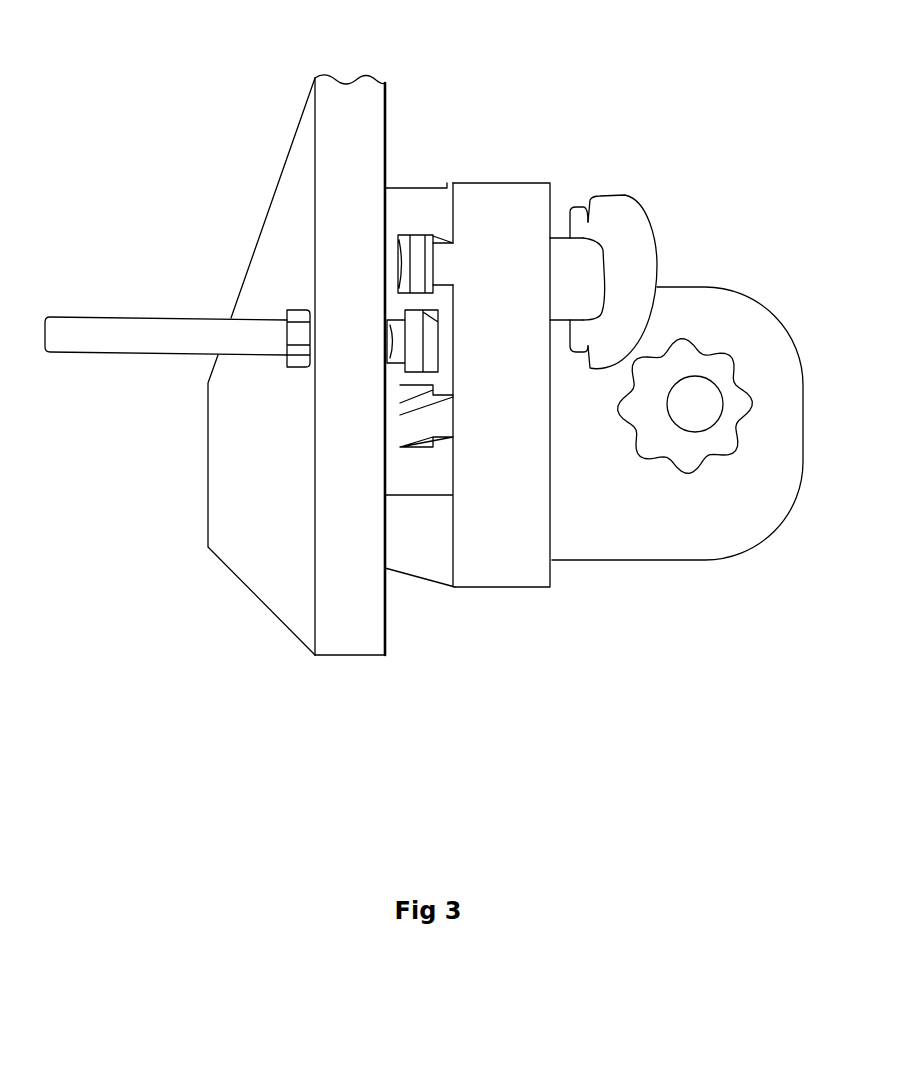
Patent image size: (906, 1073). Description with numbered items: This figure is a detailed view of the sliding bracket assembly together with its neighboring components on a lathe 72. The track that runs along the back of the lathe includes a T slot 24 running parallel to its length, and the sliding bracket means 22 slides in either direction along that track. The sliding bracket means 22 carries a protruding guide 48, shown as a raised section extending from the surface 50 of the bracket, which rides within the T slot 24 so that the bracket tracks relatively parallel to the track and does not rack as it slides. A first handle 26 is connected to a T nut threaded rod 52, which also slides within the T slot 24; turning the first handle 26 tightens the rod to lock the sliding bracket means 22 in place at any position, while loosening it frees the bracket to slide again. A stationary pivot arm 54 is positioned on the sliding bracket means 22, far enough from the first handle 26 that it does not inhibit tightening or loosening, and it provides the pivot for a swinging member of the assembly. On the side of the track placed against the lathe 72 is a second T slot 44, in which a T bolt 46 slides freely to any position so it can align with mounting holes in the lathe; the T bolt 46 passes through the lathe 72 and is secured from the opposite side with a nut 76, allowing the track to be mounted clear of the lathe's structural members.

The sliding bracket means 22 is at (512, 552).
The T slot 24 is at (402, 240).
The first handle 26 is at (630, 228).
The T slot 44 is at (410, 357).
The T bolt 46 is at (175, 330).
The protruding guide 48 is at (450, 257).
The surface 50 is at (430, 552).
The T nut threaded rod 52 is at (423, 253).
The stationary pivot arm 54 is at (688, 310).
The lathe 72 is at (262, 557).
The nut 76 is at (298, 327).